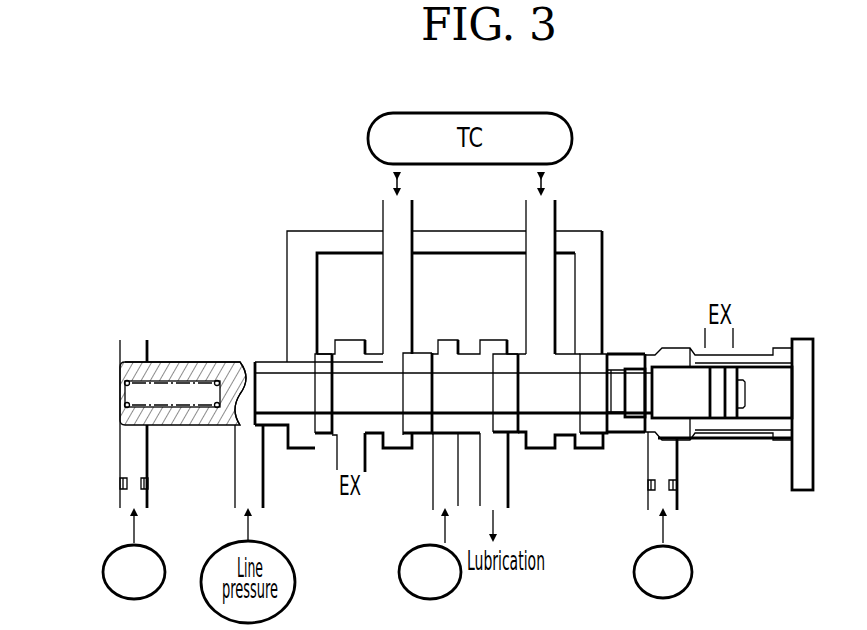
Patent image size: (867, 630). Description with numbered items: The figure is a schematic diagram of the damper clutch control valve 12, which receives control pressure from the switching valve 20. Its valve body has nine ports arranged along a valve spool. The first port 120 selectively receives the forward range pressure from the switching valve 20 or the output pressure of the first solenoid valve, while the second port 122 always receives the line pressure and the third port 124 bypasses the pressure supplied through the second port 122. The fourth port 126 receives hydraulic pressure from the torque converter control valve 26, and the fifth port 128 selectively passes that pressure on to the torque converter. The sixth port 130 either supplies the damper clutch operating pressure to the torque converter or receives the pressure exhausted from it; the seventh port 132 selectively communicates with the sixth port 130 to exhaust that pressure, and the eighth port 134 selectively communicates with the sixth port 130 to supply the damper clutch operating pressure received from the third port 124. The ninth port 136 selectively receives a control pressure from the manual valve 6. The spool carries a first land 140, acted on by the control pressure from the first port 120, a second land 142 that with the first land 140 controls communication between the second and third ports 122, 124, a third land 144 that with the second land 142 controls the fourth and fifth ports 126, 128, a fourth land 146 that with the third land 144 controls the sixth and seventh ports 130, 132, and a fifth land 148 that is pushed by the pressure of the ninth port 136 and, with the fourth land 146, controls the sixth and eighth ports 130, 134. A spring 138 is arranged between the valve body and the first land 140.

The damper clutch control valve 12 is at (95, 398).
The first port 120 is at (130, 430).
The second port 122 is at (250, 428).
The third port 124 is at (300, 355).
The fourth port 126 is at (442, 438).
The fifth port 128 is at (397, 345).
The sixth port 130 is at (541, 350).
The seventh port 132 is at (493, 437).
The eighth port 134 is at (588, 347).
The ninth port 136 is at (665, 445).
The spring 138 is at (122, 380).
The first land 140 is at (205, 365).
The second land 142 is at (322, 417).
The third land 144 is at (415, 418).
The fourth land 146 is at (505, 350).
The fifth land 148 is at (590, 420).
The switching valve 20 is at (134, 555).
The torque converter control valve 26 is at (430, 555).
The manual valve 6 is at (663, 555).